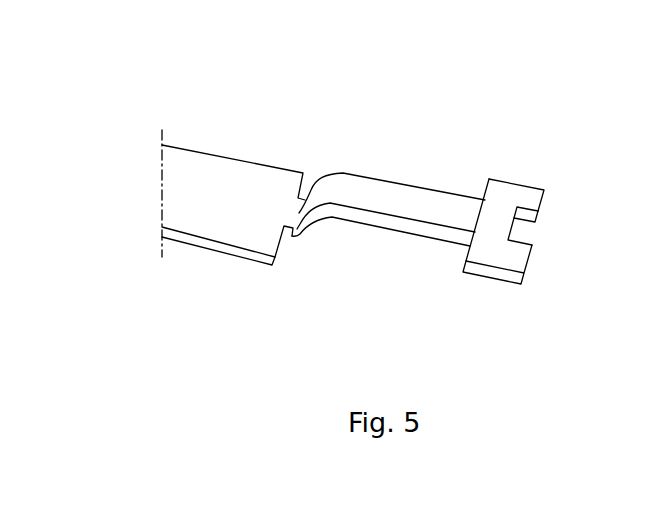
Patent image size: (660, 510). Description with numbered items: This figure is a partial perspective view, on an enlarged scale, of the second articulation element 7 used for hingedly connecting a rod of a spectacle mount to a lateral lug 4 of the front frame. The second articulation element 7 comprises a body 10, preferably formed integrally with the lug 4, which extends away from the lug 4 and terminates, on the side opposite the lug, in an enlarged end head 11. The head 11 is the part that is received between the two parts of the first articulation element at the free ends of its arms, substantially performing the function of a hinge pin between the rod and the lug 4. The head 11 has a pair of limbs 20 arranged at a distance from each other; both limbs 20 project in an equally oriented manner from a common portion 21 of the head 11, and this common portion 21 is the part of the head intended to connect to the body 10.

The lateral lug 4 is at (217, 225).
The second articulation element 7 is at (384, 267).
The body 10 is at (383, 196).
The head 11 is at (553, 220).
The limbs 20 is at (545, 197).
The common portion 21 is at (497, 226).